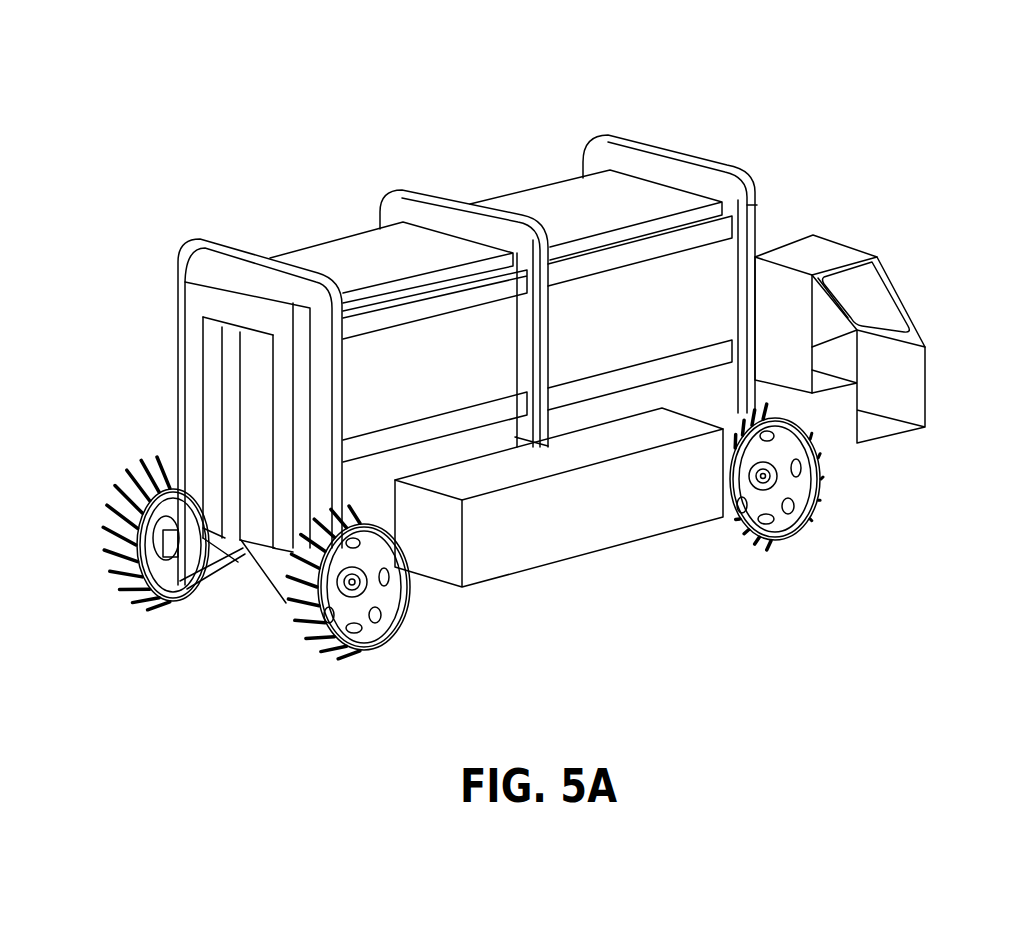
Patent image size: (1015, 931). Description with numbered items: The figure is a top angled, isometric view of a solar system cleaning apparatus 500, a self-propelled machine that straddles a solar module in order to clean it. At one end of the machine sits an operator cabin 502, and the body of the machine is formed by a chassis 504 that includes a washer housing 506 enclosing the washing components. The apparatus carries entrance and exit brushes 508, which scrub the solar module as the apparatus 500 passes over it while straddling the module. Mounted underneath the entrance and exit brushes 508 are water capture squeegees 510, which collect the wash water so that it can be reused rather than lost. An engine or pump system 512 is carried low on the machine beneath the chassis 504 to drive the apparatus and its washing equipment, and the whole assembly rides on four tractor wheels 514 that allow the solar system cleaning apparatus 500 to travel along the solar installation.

The solar system cleaning apparatus 500 is at (781, 75).
The operator cabin 502 is at (877, 298).
The chassis 504 is at (433, 192).
The washer housing 506 is at (317, 251).
The entrance and exit brushes 508 is at (213, 363).
The water capture squeegees 510 is at (262, 556).
The engine or pump system 512 is at (572, 550).
The tractor wheels 514 is at (787, 520).